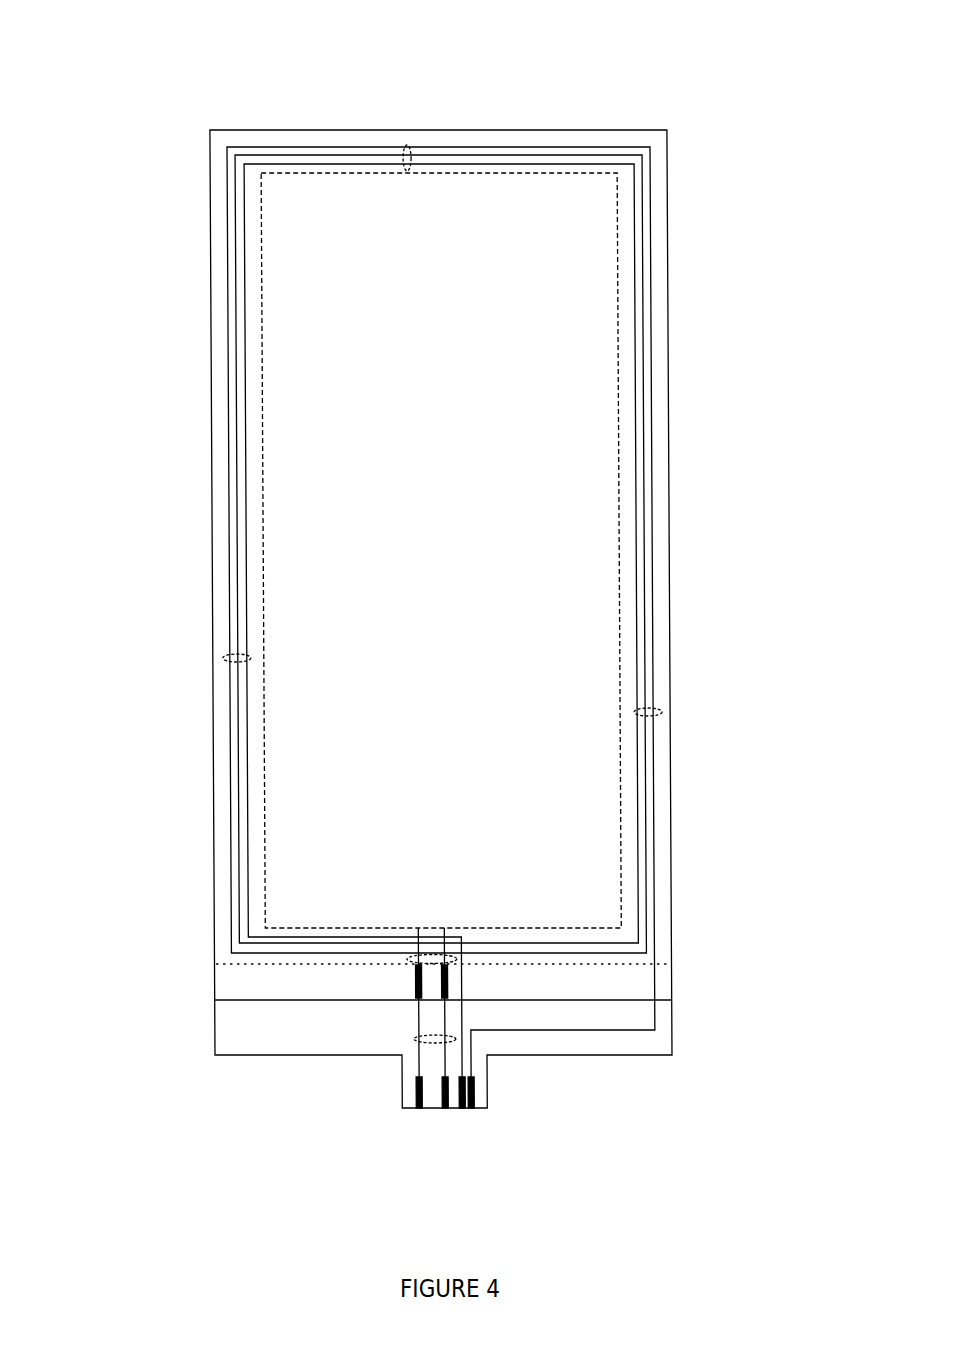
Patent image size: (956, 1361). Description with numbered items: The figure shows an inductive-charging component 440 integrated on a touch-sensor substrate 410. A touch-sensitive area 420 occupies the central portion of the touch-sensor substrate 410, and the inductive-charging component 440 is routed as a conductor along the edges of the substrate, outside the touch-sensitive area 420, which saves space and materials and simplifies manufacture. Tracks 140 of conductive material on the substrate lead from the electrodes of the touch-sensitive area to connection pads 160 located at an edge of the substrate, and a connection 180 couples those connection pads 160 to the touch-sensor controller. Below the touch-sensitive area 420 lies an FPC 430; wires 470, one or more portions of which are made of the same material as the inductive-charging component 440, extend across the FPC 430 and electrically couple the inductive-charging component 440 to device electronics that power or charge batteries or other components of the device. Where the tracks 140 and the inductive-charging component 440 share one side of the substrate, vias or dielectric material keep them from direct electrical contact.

The touch-sensor substrate 410 is at (209, 462).
The touch-sensitive area 420 is at (456, 530).
The FPC 430 is at (313, 1032).
The inductive-charging component 440 is at (407, 143).
The tracks 140 is at (414, 960).
The connection pads 160 is at (414, 988).
The connection 180 is at (414, 1041).
The wires 470 is at (466, 1020).